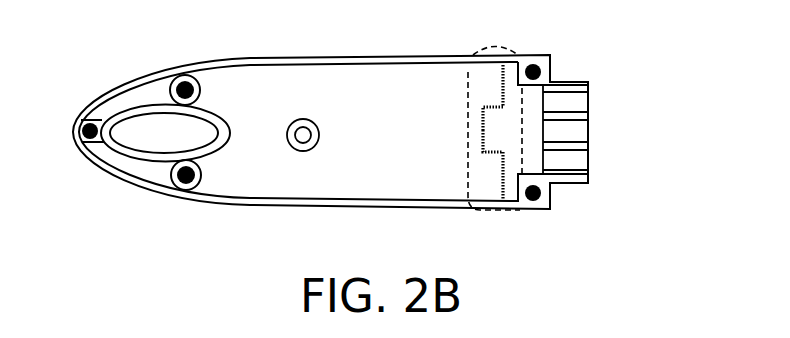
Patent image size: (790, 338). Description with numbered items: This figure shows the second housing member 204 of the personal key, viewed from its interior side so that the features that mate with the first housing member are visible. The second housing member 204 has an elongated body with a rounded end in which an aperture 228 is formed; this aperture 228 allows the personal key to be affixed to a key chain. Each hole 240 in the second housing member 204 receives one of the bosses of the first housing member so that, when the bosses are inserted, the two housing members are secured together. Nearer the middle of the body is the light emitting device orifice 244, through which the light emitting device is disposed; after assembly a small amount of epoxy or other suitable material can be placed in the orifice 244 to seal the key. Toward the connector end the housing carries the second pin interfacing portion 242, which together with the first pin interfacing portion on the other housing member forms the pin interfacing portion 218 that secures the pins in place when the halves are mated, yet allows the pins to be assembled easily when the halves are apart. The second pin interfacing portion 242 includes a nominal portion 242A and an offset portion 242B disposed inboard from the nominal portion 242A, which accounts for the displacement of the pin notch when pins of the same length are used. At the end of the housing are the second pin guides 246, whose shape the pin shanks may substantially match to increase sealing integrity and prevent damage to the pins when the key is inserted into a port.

The second housing member 204 is at (84, 103).
The pin interfacing portion 218 is at (502, 212).
The aperture 228 is at (135, 149).
The hole 240 is at (537, 64).
The second pin interfacing portion 242 is at (505, 44).
The nominal portion 242A is at (502, 77).
The offset portion 242B is at (482, 128).
The light emitting device orifice 244 is at (292, 147).
The second pin guides 246 is at (577, 113).